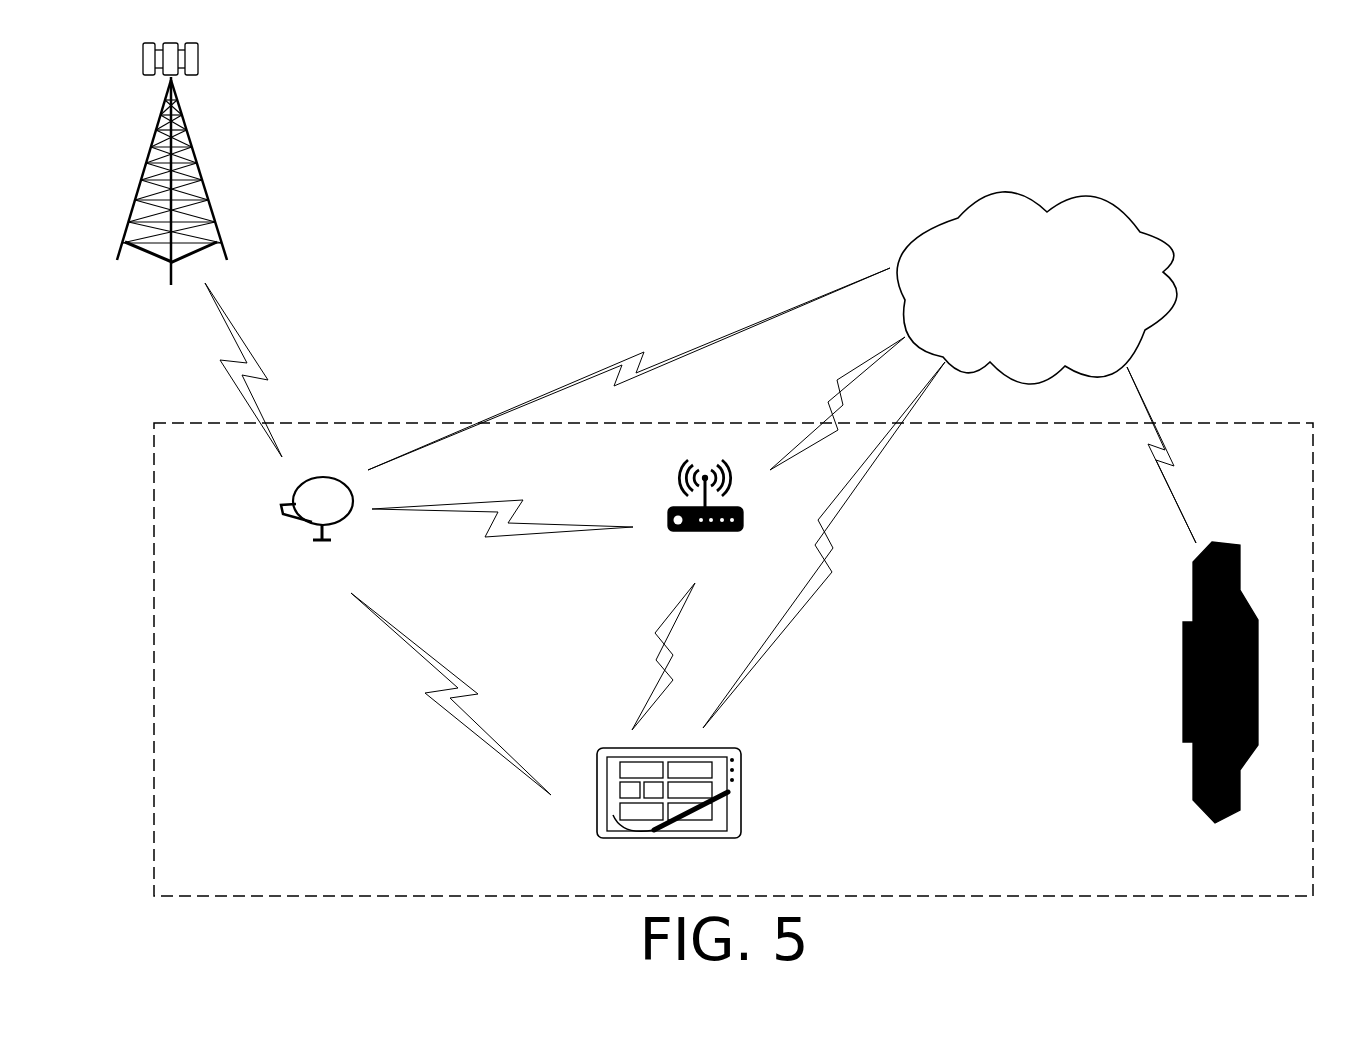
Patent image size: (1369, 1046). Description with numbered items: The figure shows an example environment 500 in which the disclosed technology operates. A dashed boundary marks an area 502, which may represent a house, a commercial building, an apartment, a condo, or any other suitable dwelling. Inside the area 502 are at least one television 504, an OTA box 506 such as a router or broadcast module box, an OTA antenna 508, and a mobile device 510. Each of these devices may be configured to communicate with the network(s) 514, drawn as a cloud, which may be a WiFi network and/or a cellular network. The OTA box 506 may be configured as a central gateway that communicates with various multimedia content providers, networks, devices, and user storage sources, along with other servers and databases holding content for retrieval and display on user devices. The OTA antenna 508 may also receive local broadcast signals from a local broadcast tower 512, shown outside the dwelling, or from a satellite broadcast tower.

The example environment 500 is at (1238, 151).
The area 502 is at (1258, 461).
The television 504 is at (1213, 869).
The OTA box 506 is at (687, 567).
The OTA antenna 508 is at (335, 564).
The mobile device 510 is at (650, 880).
The local broadcast tower 512 is at (153, 354).
The network(s) 514 is at (1037, 288).